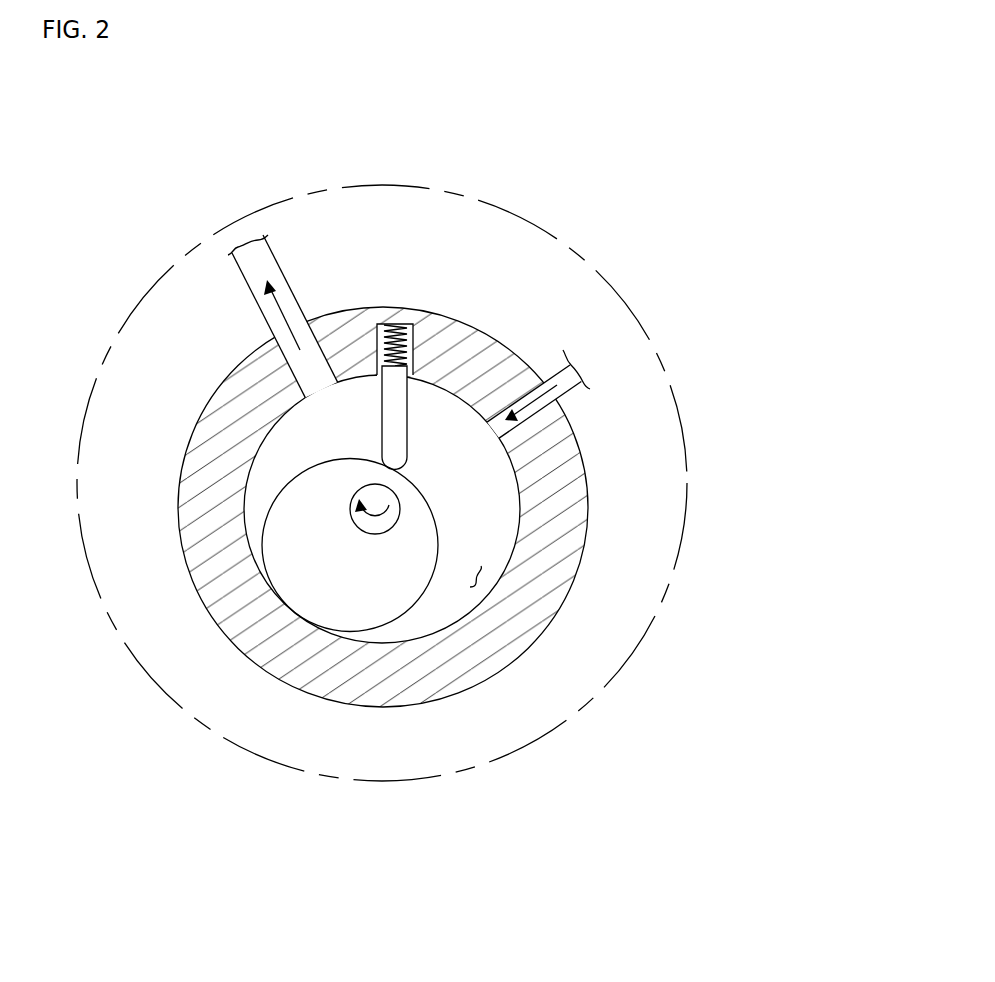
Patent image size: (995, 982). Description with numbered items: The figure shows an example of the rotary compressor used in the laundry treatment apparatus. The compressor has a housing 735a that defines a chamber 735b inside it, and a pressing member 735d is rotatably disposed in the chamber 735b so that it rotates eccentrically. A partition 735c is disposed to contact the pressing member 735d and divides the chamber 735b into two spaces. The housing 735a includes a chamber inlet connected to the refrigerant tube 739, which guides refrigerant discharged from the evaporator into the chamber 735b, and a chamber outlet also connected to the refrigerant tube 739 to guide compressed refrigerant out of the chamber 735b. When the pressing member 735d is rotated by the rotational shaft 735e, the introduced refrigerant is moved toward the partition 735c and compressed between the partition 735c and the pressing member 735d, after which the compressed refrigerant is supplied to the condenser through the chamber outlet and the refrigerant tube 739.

The housing 735a is at (475, 673).
The chamber 735b is at (478, 578).
The partition 735c is at (400, 432).
The pressing member 735d is at (317, 590).
The rotational shaft 735e is at (388, 502).
The refrigerant tube 739 is at (270, 272).